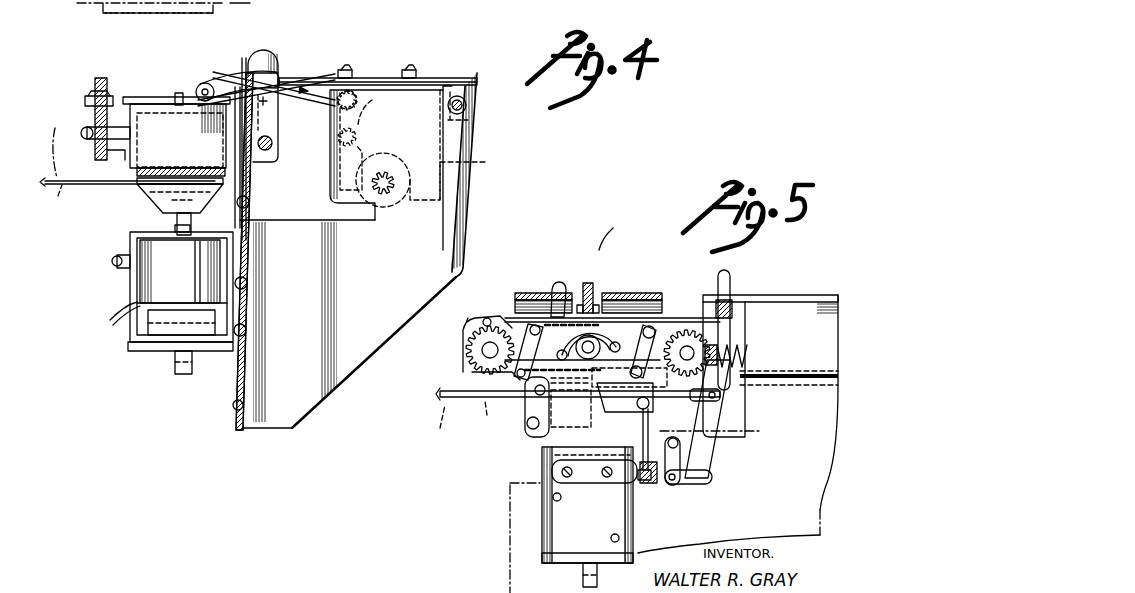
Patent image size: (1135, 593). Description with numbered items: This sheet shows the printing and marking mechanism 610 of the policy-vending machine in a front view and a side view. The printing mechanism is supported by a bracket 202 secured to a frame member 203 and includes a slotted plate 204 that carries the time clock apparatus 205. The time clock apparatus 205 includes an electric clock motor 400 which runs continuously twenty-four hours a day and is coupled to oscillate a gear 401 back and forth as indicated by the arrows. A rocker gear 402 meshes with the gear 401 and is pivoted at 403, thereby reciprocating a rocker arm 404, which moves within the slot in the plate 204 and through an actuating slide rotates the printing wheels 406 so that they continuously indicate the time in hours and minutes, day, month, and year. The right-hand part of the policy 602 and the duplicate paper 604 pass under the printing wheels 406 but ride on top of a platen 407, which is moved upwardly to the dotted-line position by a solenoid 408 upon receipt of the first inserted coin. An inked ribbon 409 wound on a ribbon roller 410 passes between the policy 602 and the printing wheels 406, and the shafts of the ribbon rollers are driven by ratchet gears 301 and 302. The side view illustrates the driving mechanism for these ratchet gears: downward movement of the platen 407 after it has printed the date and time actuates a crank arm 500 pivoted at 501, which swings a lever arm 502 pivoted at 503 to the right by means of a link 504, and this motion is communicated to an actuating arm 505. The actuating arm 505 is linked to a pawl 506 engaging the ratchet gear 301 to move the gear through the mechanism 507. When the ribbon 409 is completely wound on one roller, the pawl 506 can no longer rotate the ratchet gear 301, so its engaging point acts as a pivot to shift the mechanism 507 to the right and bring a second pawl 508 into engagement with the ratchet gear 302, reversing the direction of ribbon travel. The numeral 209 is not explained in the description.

In FIG. 4, the bracket 202 is at (465, 234).
In FIG. 4, the frame member 203 is at (238, 428).
In FIG. 4, the slotted plate 204 is at (322, 77).
In FIG. 5, the slotted plate 204 is at (640, 300).
In FIG. 4, the time clock apparatus 205 is at (378, 192).
In FIG. 4, the conveyor frame 209 is at (255, 5).
In FIG. 5, the ratchet gear 301 is at (470, 351).
In FIG. 5, the ratchet gear 302 is at (690, 332).
In FIG. 4, the electric clock motor 400 is at (464, 177).
In FIG. 4, the gear 401 is at (375, 205).
In FIG. 4, the rocker gear 402 is at (368, 140).
In FIG. 4, the pivot 403 is at (340, 160).
In FIG. 4, the rocker arm 404 is at (224, 72).
In FIG. 5, the rocker arm 404 is at (596, 284).
In FIG. 4, the printing wheels 406 is at (208, 150).
In FIG. 4, the platen 407 is at (150, 205).
In FIG. 5, the platen 407 is at (597, 403).
In FIG. 4, the solenoid 408 is at (150, 275).
In FIG. 5, the solenoid 408 is at (553, 513).
In FIG. 4, the inked ribbon 409 is at (120, 178).
In FIG. 5, the inked ribbon 409 is at (490, 373).
In FIG. 4, the ribbon roller 410 is at (170, 131).
In FIG. 5, the crank arm 500 is at (620, 470).
In FIG. 5, the pivot 501 is at (680, 446).
In FIG. 5, the lever arm 502 is at (715, 412).
In FIG. 5, the pivot 503 is at (735, 292).
In FIG. 5, the link 504 is at (682, 485).
In FIG. 5, the actuating arm 505 is at (650, 414).
In FIG. 5, the pawl 506 is at (530, 335).
In FIG. 5, the mechanism 507 is at (548, 300).
In FIG. 5, the second pawl 508 is at (665, 305).
In FIG. 4, the policy 602 is at (79, 4).
In FIG. 5, the policy 602 is at (485, 418).
In FIG. 4, the duplicate paper 604 is at (104, 14).
In FIG. 5, the duplicate paper 604 is at (427, 427).
In FIG. 4, the printing and marking mechanism 610 is at (290, 70).
In FIG. 5, the printing and marking mechanism 610 is at (621, 232).